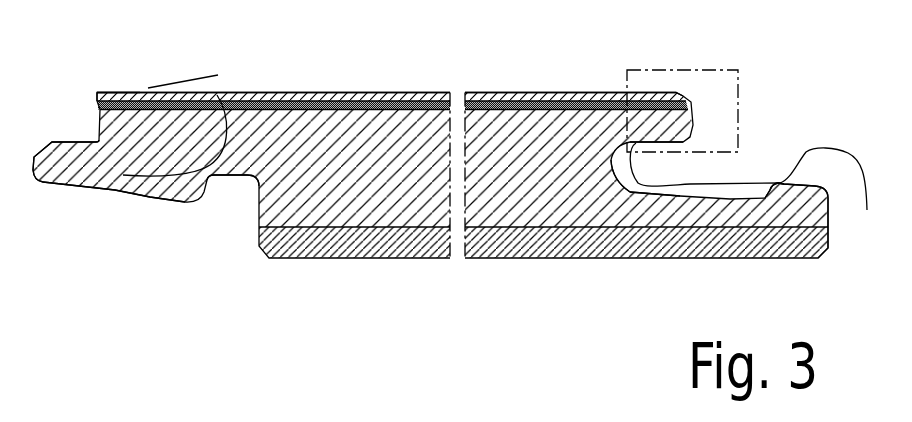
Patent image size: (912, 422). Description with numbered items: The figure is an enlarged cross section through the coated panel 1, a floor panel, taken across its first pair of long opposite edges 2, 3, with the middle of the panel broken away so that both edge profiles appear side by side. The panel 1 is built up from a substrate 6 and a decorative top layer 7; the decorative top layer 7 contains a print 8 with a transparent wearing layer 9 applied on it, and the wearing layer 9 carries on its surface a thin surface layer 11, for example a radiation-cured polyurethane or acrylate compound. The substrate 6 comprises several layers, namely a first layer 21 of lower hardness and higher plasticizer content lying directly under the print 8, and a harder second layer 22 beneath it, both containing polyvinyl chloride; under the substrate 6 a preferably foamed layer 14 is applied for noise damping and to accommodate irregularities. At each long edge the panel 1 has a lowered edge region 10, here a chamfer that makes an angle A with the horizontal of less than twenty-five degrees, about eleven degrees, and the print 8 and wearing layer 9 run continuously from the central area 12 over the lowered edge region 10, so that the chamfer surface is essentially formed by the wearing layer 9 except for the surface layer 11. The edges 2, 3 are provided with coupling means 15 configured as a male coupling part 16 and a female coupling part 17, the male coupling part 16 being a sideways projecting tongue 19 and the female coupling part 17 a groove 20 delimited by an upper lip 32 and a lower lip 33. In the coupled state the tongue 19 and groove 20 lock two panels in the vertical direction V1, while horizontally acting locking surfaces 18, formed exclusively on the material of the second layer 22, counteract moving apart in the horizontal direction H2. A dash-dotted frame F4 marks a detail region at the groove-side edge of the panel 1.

The coated panel 1 is at (338, 147).
The long opposite edge 2 is at (110, 238).
The long opposite edge 3 is at (728, 168).
The substrate 6 is at (507, 188).
The decorative top layer 7 is at (88, 97).
The print 8 is at (418, 98).
The transparent wearing layer 9 is at (233, 100).
The lowered edge region 10 is at (105, 75).
The surface layer 11 is at (557, 92).
The central area 12 is at (290, 92).
The foamed layer 14 is at (550, 242).
The coupling means 15 is at (142, 222).
The male coupling part 16 is at (130, 172).
The female coupling part 17 is at (630, 182).
The horizontally acting locking surfaces 18 is at (778, 180).
The tongue 19 is at (217, 95).
The groove 20 is at (636, 182).
The first layer 21 is at (493, 102).
The second layer 22 is at (400, 173).
The upper lip 32 is at (647, 130).
The lower lip 33 is at (723, 213).
The angle A is at (201, 106).
The detail region F4 is at (675, 70).
The vertical direction V1 is at (218, 224).
The horizontal direction H2 is at (205, 258).